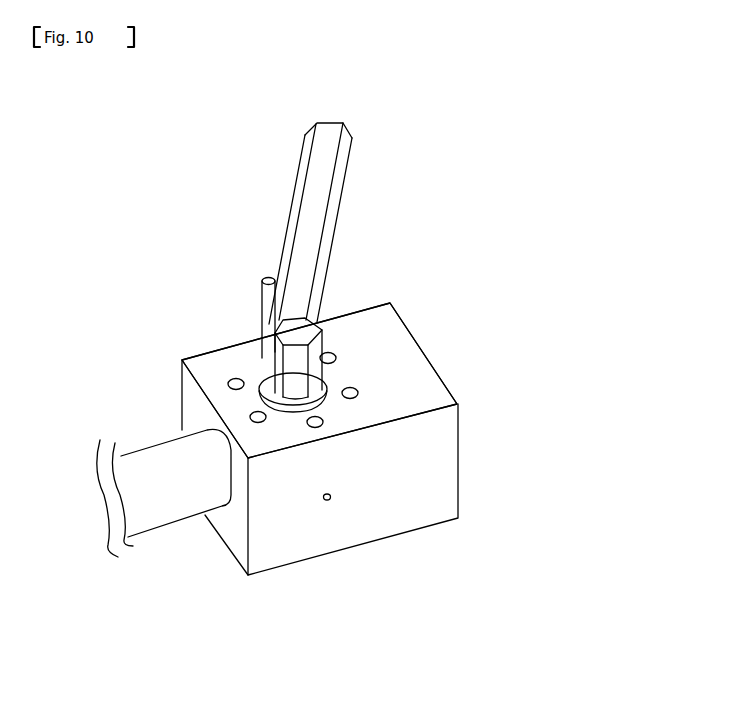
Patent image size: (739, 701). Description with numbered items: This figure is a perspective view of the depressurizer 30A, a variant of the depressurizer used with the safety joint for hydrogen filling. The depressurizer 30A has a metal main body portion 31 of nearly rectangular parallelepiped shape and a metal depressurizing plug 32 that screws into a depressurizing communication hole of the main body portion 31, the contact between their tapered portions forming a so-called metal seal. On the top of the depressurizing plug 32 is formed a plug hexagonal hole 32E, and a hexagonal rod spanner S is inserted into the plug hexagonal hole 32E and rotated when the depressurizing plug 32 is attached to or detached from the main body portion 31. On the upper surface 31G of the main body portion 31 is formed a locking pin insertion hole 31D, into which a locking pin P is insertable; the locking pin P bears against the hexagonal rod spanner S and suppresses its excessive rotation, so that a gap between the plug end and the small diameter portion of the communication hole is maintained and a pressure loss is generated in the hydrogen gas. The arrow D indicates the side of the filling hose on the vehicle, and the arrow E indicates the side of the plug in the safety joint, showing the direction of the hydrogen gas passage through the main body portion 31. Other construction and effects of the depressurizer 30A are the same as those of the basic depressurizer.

The depressurizer 30A is at (463, 257).
The depressurizer main body portion 31 is at (457, 498).
The upper surface 31G is at (407, 384).
The locking pin insertion hole 31D is at (236, 378).
The depressurizing plug 32 is at (320, 391).
The plug hexagonal hole 32E is at (322, 378).
The locking pin P is at (262, 288).
The hexagonal rod spanner S is at (353, 141).
The arrow D is at (170, 563).
The arrow E is at (485, 422).